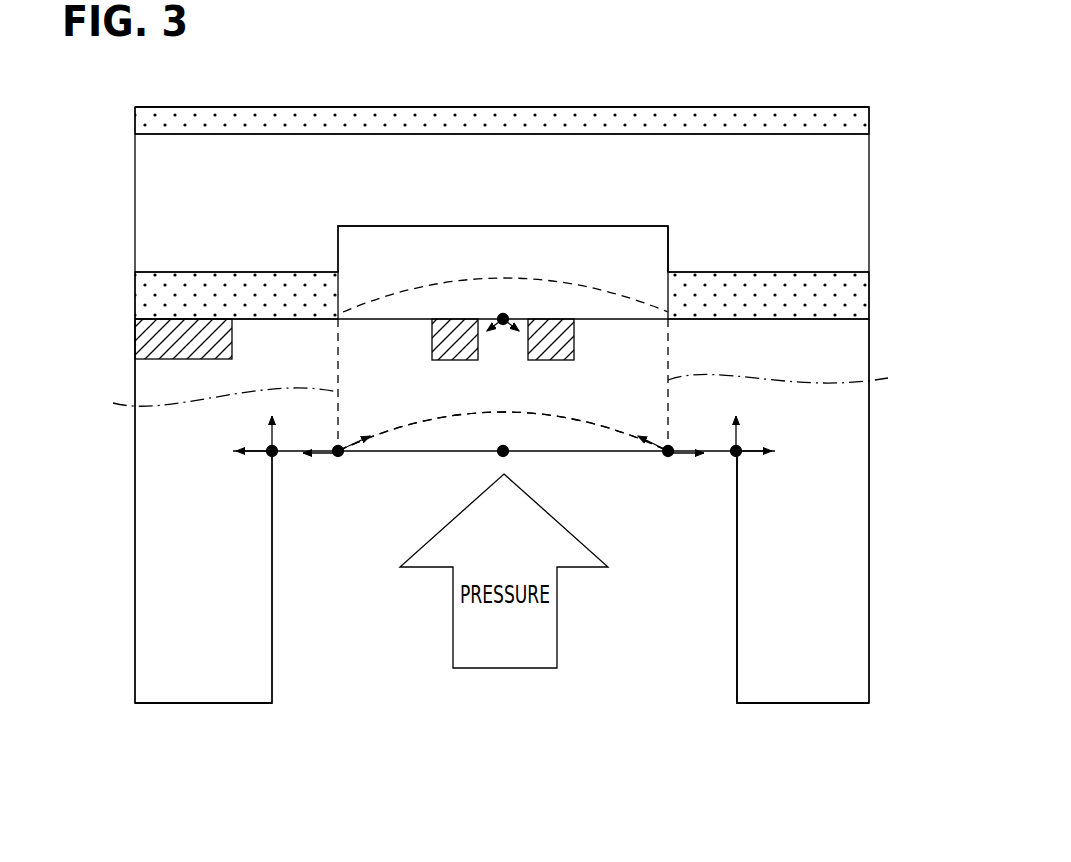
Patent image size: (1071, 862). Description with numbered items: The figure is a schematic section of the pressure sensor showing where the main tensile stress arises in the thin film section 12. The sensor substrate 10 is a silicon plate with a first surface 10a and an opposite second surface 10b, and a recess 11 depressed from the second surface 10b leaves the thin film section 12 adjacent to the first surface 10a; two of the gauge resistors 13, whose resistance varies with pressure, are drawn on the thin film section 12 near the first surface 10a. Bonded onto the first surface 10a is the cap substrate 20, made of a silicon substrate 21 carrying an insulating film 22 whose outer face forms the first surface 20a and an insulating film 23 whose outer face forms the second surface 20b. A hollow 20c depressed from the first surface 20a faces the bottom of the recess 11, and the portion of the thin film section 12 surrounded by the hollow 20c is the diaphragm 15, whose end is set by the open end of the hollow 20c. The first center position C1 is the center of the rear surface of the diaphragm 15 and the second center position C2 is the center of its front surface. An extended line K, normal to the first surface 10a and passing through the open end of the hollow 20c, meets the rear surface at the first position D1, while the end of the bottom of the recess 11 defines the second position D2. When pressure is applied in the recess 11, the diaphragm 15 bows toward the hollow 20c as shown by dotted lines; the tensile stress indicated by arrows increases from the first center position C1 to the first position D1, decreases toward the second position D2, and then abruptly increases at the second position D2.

The sensor substrate 10 is at (131, 512).
The first surface 10a is at (200, 319).
The second surface 10b is at (188, 703).
The recess 11 is at (737, 634).
The thin film section 12 is at (400, 470).
The gauge resistors 13 is at (448, 337).
The diaphragm 15 is at (600, 392).
The cap substrate 20 is at (131, 164).
The first surface 20a is at (285, 336).
The second surface 20b is at (175, 107).
The hollow 20c is at (668, 260).
The silicon substrate 21 is at (850, 204).
The insulating film 22 is at (850, 292).
The insulating film 23 is at (856, 115).
The extended line K is at (503, 394).
The first center position C1 is at (503, 434).
The second center position C2 is at (505, 304).
The first position D1 is at (503, 463).
The second position D2 is at (503, 453).